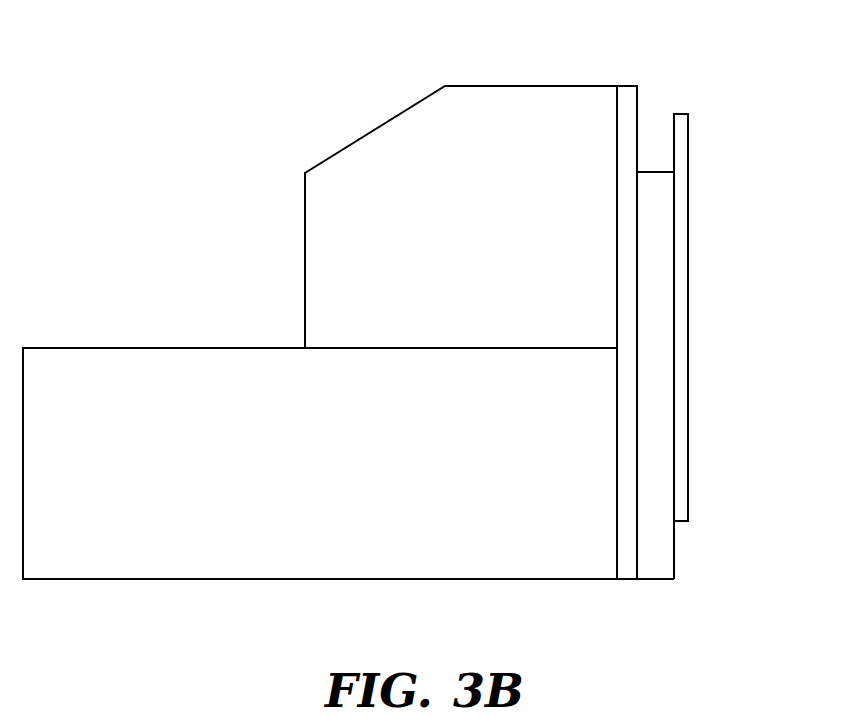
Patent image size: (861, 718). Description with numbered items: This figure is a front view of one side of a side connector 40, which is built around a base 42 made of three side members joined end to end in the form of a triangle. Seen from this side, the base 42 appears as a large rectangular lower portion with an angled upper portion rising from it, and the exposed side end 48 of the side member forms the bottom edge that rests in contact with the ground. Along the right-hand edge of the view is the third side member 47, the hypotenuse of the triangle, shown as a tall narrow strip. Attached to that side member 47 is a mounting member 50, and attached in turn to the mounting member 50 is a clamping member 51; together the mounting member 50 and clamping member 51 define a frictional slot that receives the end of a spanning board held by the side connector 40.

The side connector 40 is at (810, 318).
The base 42 is at (465, 558).
The third side member 47 is at (625, 92).
The exposed side end 48 is at (281, 579).
The mounting member 50 is at (655, 187).
The clamping member 51 is at (680, 120).